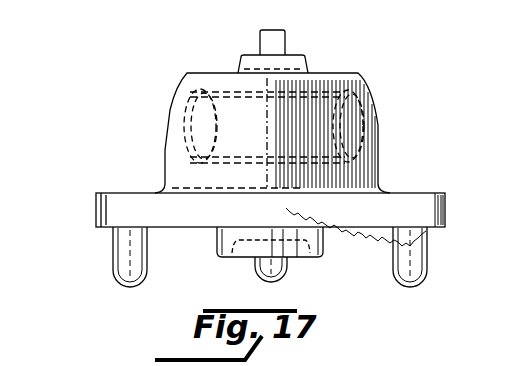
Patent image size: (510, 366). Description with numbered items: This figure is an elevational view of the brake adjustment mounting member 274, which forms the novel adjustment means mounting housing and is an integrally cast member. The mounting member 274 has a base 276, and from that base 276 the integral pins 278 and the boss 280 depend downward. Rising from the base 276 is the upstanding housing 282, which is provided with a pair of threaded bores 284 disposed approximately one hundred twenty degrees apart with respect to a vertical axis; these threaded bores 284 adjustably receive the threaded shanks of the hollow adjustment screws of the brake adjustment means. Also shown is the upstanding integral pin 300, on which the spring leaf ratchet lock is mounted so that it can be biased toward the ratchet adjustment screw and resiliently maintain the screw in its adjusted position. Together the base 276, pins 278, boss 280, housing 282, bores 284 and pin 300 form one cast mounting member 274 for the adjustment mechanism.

The brake adjustment mounting member 274 is at (412, 111).
The base 276 is at (106, 212).
The integral pins 278 is at (121, 266).
The boss 280 is at (226, 257).
The upstanding housing 282 is at (180, 82).
The threaded bores 284 is at (186, 117).
The upstanding integral pin 300 is at (286, 38).